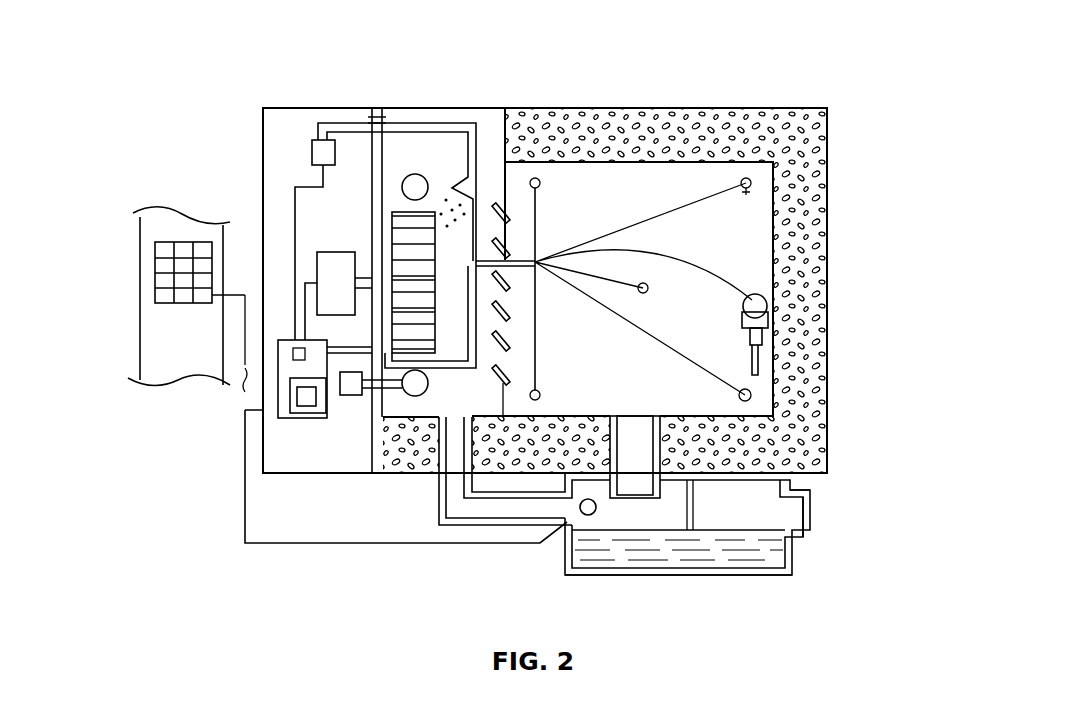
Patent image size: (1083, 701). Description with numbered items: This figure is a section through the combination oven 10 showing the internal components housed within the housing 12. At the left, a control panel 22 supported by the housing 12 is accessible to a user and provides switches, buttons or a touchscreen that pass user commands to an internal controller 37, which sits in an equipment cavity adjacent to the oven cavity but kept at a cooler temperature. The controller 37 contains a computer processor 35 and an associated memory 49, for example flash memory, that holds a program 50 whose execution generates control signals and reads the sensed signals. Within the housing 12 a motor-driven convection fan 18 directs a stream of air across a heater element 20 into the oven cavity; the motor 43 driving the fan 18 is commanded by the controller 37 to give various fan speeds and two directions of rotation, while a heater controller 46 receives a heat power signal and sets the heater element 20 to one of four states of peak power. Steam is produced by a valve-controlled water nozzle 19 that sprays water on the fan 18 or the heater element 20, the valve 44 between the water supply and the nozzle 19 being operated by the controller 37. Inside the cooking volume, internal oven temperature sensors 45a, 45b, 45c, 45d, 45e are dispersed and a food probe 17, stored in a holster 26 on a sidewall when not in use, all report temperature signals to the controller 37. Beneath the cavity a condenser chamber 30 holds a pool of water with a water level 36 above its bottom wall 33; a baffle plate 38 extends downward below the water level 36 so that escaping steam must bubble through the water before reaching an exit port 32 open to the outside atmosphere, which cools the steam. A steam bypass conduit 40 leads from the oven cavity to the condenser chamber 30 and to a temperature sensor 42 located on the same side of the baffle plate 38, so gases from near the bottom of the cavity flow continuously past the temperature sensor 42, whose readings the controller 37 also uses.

The combination oven 10 is at (147, 42).
The housing 12 is at (552, 112).
The food probe 17 is at (768, 314).
The convection fan 18 is at (418, 262).
The water nozzle 19 is at (462, 178).
The heater element 20 is at (414, 186).
The control panel 22 is at (183, 305).
The holster 26 is at (762, 338).
The condenser chamber 30 is at (790, 578).
The exit port 32 is at (812, 500).
The bottom wall 33 is at (728, 578).
The computer processor 35 is at (293, 350).
The water level 36 is at (735, 525).
The internal controller 37 is at (263, 387).
The baffle plate 38 is at (684, 515).
The steam bypass conduit 40 is at (463, 510).
The temperature sensor 42 is at (584, 515).
The motor 43 is at (338, 252).
The valve 44 is at (312, 151).
The internal oven temperature sensor 45a is at (538, 180).
The internal oven temperature sensor 45b is at (745, 178).
The internal oven temperature sensor 45c is at (752, 395).
The internal oven temperature sensor 45d is at (541, 391).
The internal oven temperature sensor 45e is at (648, 290).
The heater controller 46 is at (350, 395).
The memory 49 is at (278, 413).
The program 50 is at (305, 405).